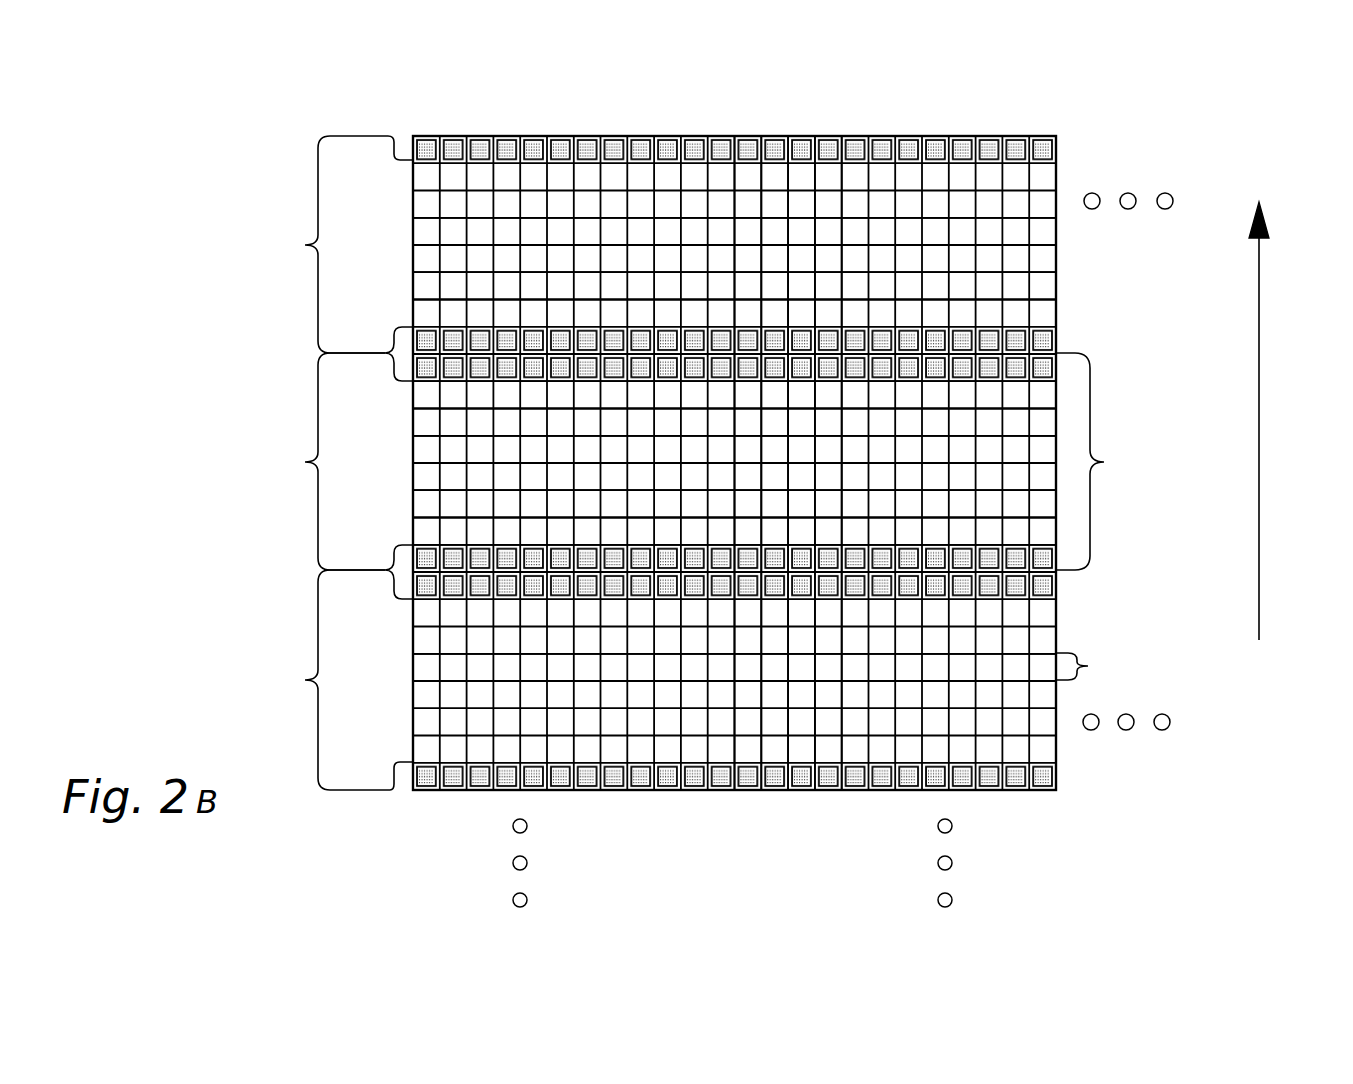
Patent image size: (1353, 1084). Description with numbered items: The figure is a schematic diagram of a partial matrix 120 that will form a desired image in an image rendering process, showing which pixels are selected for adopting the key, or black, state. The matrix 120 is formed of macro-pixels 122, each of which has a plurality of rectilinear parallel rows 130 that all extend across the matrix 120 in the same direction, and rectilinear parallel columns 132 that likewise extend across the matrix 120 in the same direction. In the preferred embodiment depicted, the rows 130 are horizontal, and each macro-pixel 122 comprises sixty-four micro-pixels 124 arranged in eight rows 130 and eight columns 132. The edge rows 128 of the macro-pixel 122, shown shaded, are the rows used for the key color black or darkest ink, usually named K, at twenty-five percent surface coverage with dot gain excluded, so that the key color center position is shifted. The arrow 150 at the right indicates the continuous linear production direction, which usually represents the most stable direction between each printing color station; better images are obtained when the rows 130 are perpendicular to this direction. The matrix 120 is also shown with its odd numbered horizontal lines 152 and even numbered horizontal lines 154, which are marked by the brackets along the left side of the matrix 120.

The partial matrix 120 is at (1112, 140).
The macro-pixel 122 is at (1104, 462).
The micro-pixel 124 is at (1088, 666).
The edge rows 128 is at (386, 149).
The rows 130 is at (1057, 233).
The columns 132 is at (828, 790).
The arrow 150 is at (1259, 527).
The odd numbered horizontal lines 152 is at (305, 245).
The even numbered horizontal lines 154 is at (305, 462).